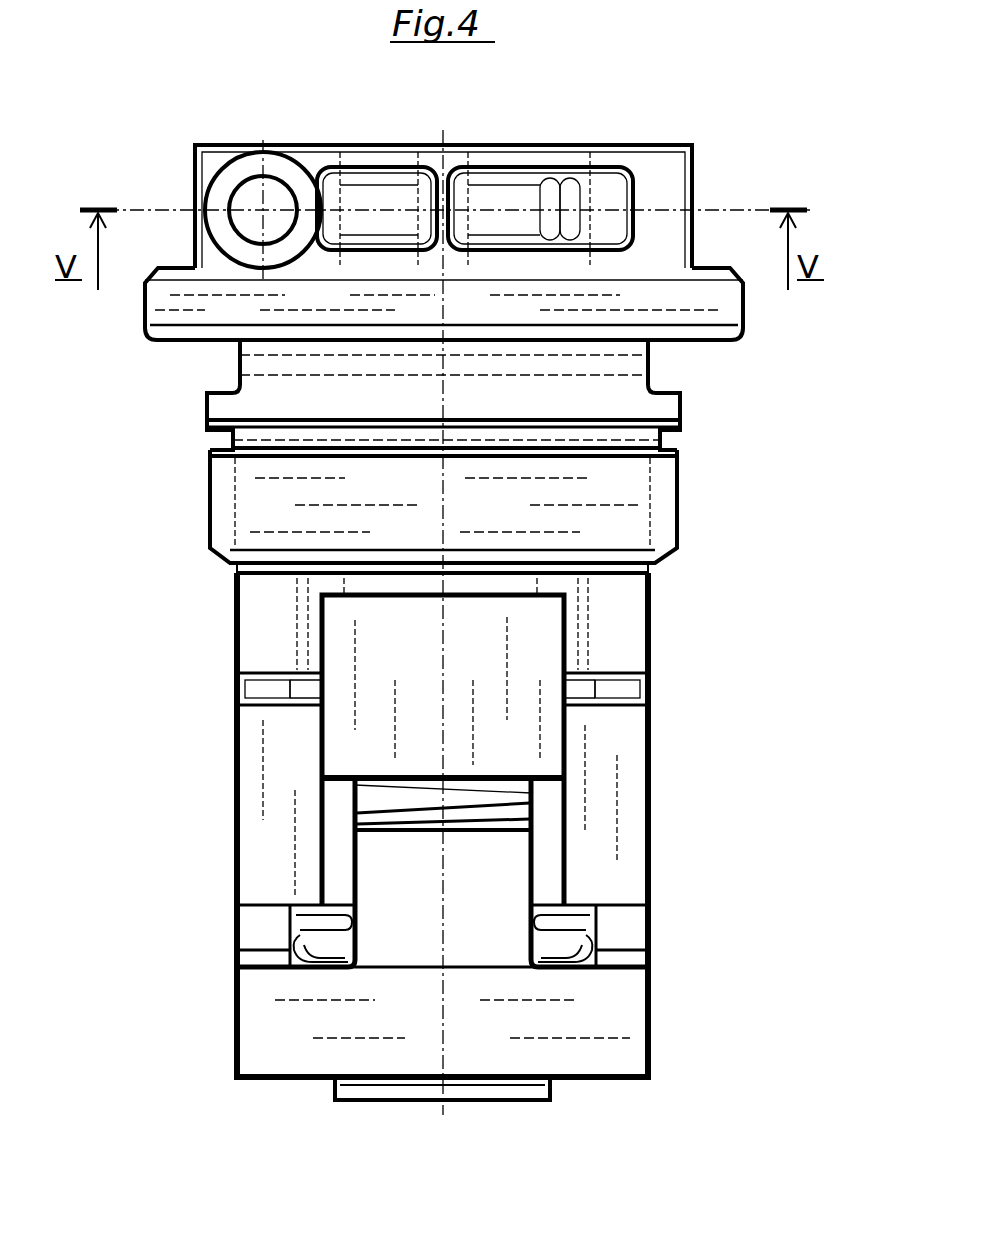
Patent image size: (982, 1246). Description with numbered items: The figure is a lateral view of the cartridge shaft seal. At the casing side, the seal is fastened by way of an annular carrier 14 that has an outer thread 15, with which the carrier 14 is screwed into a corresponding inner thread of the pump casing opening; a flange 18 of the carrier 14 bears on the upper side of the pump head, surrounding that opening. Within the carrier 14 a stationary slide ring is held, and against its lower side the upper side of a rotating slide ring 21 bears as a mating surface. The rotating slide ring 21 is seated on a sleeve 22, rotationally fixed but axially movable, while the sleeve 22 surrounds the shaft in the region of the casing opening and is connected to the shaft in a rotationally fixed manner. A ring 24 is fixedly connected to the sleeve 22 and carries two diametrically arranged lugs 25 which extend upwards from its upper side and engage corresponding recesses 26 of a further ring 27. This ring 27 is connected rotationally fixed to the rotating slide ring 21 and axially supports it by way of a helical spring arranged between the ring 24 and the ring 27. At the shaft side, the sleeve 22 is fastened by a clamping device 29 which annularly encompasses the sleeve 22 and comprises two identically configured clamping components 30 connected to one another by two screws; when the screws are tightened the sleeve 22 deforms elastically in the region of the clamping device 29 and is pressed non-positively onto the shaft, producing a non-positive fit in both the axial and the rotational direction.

The carrier 14 is at (667, 370).
The outer thread 15 is at (673, 513).
The flange 18 is at (718, 308).
The rotating slide ring 21 is at (640, 635).
The sleeve 22 is at (553, 1095).
The ring 24 is at (627, 1012).
The lugs 25 is at (507, 918).
The recesses 26 is at (565, 868).
The ring 27 is at (632, 797).
The clamping device 29 is at (700, 197).
The clamping components 30 is at (697, 170).